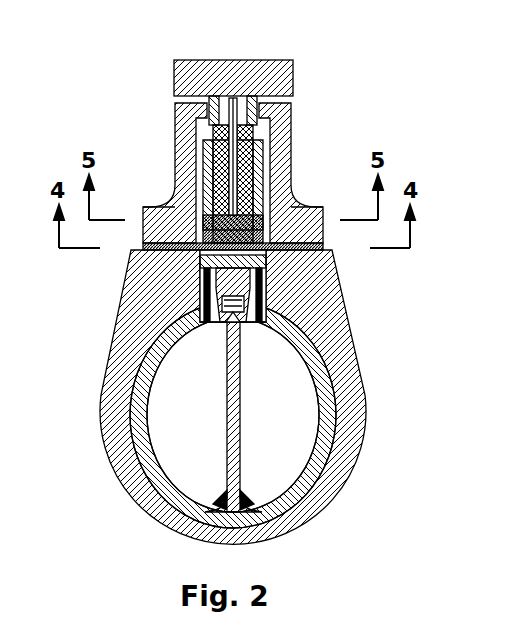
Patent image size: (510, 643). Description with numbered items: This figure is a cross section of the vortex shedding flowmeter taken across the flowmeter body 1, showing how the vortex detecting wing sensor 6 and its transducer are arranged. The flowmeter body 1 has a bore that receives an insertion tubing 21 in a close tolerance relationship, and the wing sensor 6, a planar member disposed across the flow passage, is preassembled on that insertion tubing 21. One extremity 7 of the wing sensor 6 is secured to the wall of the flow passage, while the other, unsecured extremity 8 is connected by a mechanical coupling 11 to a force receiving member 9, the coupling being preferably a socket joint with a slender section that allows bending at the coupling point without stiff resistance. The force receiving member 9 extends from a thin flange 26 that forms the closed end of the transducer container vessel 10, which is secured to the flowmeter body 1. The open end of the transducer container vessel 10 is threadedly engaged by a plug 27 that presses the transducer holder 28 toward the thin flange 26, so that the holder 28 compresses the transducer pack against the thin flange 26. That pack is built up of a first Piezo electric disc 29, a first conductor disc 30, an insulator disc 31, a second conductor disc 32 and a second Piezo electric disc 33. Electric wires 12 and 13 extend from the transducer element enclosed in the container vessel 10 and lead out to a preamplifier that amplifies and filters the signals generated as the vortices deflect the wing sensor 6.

The flowmeter body 1 is at (118, 330).
The vortex detecting wing sensor 6 is at (222, 400).
The secured extremity 7 is at (242, 470).
The unsecured extremity 8 is at (238, 330).
The force receiving member 9 is at (256, 292).
The transducer container vessel 10 is at (165, 200).
The mechanical coupling 11 is at (200, 338).
The electric wire 12 is at (214, 100).
The electric wire 13 is at (254, 100).
The insertion tubing 21 is at (185, 450).
The thin flange 26 is at (256, 276).
The plug 27 is at (172, 170).
The transducer holder 28 is at (294, 125).
The first Piezo electric disc 29 is at (215, 262).
The first conductor disc 30 is at (332, 245).
The insulator disc 31 is at (152, 212).
The second conductor disc 32 is at (300, 205).
The second Piezo electric disc 33 is at (280, 148).